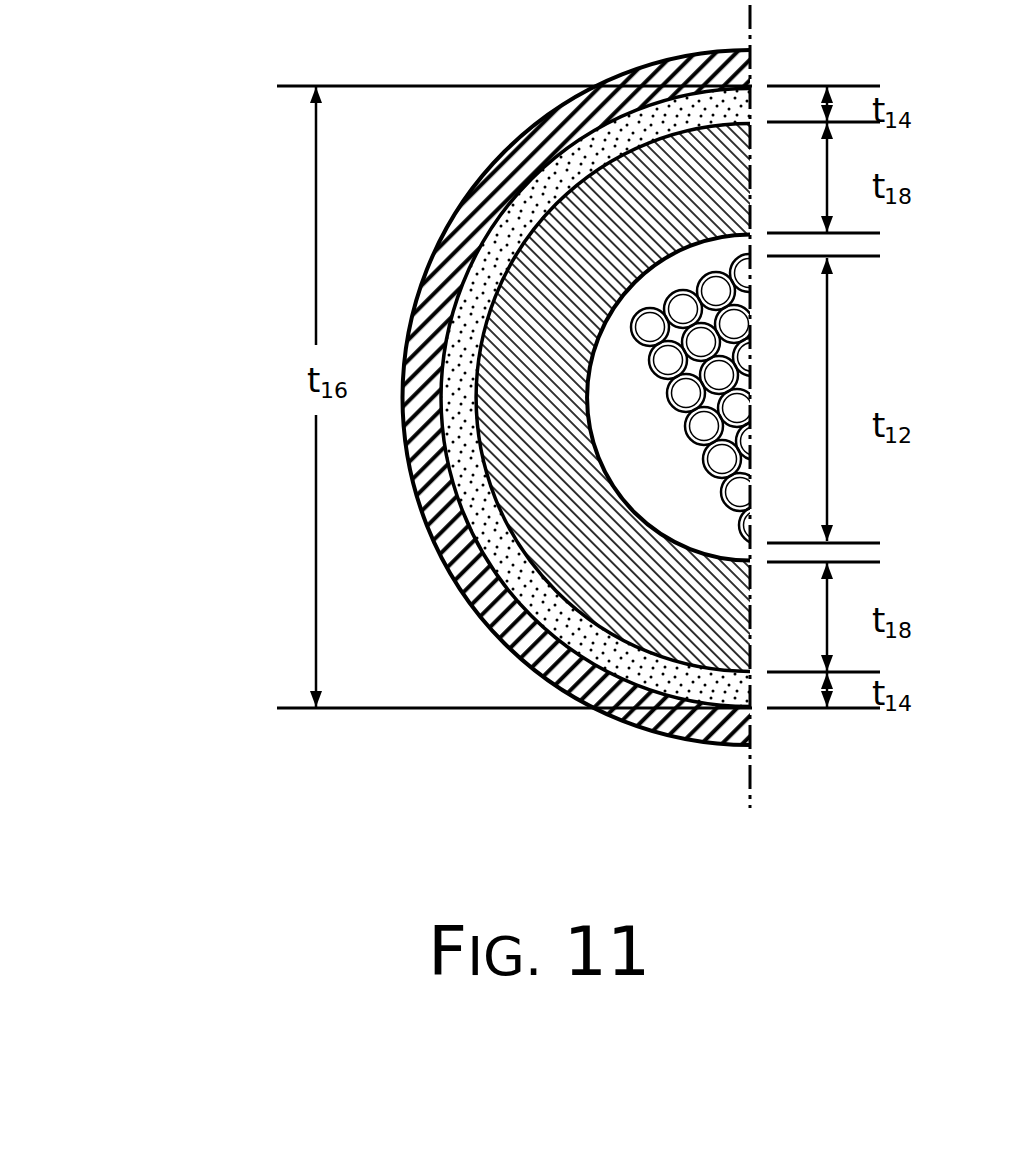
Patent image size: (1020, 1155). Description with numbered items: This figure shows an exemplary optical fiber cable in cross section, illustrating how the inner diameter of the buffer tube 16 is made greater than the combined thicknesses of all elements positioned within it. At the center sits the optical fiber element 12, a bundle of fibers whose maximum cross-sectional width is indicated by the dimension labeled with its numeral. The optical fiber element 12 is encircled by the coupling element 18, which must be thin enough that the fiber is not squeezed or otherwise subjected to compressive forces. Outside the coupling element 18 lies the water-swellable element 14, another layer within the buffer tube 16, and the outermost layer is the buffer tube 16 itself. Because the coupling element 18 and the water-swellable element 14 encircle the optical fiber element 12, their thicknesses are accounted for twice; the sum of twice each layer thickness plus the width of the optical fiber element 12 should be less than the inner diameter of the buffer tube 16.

The optical fiber element 12 is at (725, 490).
The water-swellable element 14 is at (510, 233).
The buffer tube 16 is at (517, 143).
The coupling element 18 is at (560, 518).